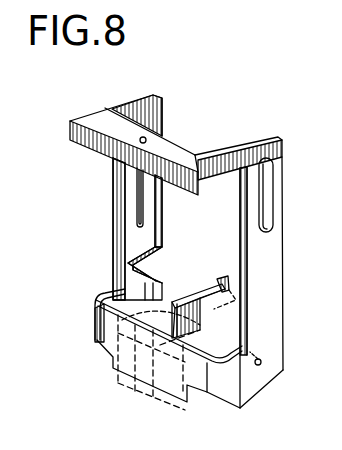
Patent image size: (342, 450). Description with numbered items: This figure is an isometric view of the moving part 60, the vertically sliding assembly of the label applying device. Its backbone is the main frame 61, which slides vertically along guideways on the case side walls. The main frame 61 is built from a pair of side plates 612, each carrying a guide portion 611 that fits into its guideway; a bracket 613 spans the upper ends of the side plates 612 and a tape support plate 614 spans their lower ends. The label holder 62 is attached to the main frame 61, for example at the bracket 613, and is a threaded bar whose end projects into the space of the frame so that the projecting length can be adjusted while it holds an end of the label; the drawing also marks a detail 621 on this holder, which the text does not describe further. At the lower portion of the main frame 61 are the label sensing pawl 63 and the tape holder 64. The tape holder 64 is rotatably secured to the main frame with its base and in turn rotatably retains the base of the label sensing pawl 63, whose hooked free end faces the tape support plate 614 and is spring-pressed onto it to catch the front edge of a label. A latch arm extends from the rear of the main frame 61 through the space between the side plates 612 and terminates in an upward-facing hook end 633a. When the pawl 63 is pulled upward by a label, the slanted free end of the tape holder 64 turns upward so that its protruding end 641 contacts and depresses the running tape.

The moving part 60 is at (223, 120).
The main frame 61 is at (167, 115).
The guide portion 611 is at (275, 168).
The side plate 612 is at (268, 306).
The label holder 62 is at (124, 158).
The bracket 613 is at (143, 163).
The notch 621 is at (112, 205).
The label sensing pawl 63 is at (173, 290).
The hook end 633a is at (220, 284).
The tape support plate 614 is at (107, 347).
The tape holder 64 is at (160, 398).
The protruding end 641 is at (122, 320).